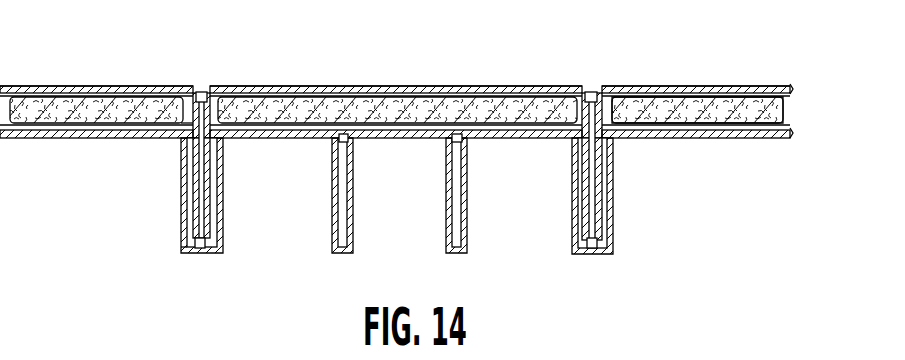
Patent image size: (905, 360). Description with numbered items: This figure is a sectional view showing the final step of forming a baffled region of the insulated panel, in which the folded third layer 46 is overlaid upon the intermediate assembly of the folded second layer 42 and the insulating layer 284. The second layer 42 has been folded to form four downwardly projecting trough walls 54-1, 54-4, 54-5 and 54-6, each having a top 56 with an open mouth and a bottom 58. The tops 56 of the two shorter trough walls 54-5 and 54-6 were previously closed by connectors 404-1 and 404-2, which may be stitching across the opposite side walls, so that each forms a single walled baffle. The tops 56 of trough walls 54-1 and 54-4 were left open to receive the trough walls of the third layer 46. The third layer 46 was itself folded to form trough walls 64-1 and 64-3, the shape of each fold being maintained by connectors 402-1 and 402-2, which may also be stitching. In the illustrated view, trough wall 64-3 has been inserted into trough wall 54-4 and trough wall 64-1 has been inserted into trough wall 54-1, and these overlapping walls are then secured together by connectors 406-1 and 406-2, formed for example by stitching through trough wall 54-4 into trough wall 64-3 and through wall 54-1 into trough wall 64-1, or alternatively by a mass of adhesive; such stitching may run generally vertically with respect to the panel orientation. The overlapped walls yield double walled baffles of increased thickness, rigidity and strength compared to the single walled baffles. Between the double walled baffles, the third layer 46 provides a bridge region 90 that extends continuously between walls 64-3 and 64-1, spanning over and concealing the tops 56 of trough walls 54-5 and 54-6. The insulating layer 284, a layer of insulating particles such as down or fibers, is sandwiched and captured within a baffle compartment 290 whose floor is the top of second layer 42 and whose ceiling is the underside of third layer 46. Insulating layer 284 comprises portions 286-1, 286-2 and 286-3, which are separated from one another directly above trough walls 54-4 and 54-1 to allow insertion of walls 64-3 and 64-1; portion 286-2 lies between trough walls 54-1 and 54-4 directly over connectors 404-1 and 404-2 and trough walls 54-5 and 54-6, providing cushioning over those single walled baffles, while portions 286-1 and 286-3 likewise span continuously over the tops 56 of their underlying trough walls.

The third layer 46 is at (715, 87).
The bridge region 90 is at (300, 87).
The baffle compartment 290 is at (512, 95).
The second layer 42 is at (768, 131).
The insulating layer 284 is at (784, 106).
The first portion of insulating layer 286-1 is at (52, 102).
The second portion of insulating layer 286-2 is at (407, 100).
The third portion of insulating layer 286-3 is at (790, 103).
The top 56 is at (185, 123).
The bottom 58 is at (182, 248).
The trough wall 54-1 is at (613, 158).
The trough wall 54-4 is at (182, 172).
The trough wall 54-5 is at (354, 172).
The trough wall 54-6 is at (467, 160).
The trough wall 64-1 is at (597, 206).
The trough wall 64-3 is at (210, 122).
The connector 402-1 is at (204, 91).
The connector 402-2 is at (592, 90).
The connector 404-1 is at (342, 133).
The connector 404-2 is at (457, 133).
The connector 406-1 is at (199, 249).
The connector 406-2 is at (592, 249).